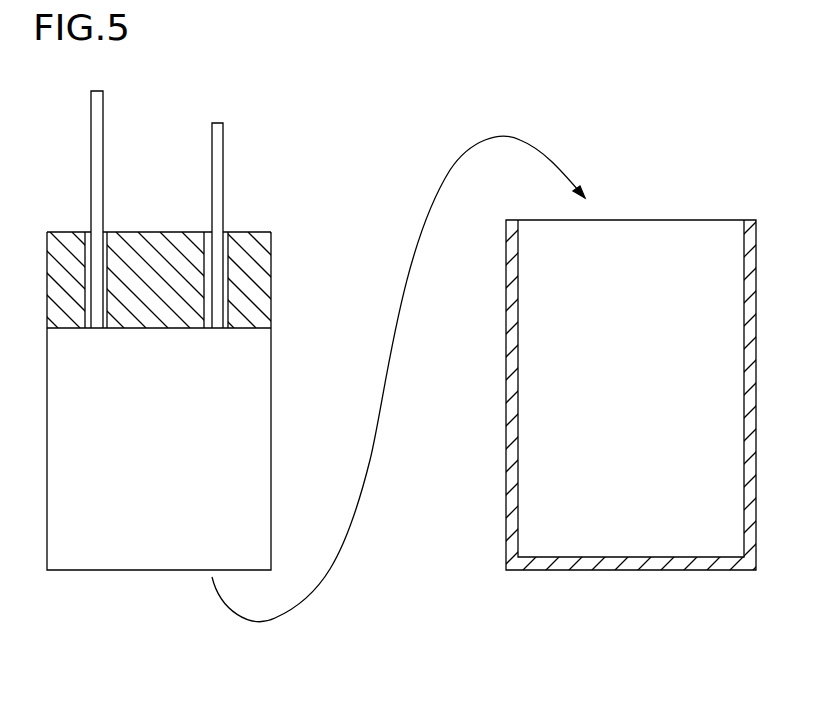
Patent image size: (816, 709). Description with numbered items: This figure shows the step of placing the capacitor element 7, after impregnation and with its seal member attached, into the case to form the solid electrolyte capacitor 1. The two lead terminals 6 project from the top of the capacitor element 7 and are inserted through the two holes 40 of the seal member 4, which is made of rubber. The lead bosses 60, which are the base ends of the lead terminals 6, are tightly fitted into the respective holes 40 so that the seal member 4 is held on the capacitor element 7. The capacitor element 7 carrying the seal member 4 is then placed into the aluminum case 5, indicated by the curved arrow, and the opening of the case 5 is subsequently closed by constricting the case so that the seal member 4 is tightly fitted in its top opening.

The solid electrolyte capacitor 1 is at (730, 199).
The seal member 4 is at (262, 232).
The case 5 is at (508, 420).
The lead terminals 6 is at (90, 151).
The capacitor element 7 is at (250, 408).
The holes 40 is at (110, 263).
The lead bosses 60 is at (97, 265).